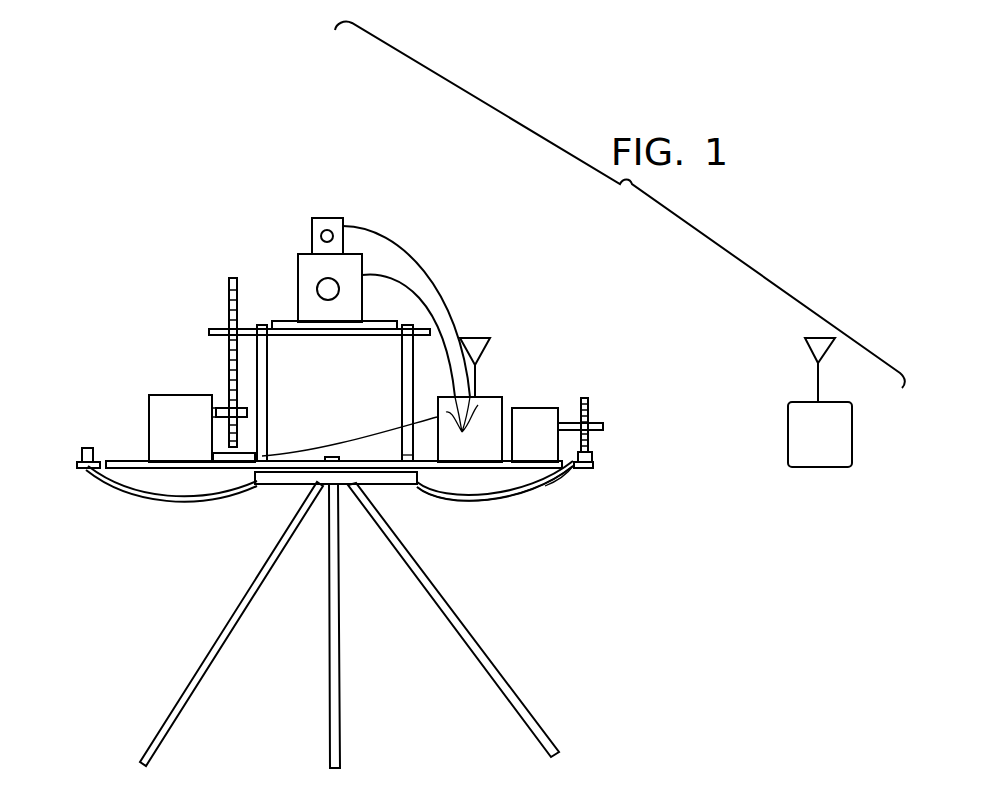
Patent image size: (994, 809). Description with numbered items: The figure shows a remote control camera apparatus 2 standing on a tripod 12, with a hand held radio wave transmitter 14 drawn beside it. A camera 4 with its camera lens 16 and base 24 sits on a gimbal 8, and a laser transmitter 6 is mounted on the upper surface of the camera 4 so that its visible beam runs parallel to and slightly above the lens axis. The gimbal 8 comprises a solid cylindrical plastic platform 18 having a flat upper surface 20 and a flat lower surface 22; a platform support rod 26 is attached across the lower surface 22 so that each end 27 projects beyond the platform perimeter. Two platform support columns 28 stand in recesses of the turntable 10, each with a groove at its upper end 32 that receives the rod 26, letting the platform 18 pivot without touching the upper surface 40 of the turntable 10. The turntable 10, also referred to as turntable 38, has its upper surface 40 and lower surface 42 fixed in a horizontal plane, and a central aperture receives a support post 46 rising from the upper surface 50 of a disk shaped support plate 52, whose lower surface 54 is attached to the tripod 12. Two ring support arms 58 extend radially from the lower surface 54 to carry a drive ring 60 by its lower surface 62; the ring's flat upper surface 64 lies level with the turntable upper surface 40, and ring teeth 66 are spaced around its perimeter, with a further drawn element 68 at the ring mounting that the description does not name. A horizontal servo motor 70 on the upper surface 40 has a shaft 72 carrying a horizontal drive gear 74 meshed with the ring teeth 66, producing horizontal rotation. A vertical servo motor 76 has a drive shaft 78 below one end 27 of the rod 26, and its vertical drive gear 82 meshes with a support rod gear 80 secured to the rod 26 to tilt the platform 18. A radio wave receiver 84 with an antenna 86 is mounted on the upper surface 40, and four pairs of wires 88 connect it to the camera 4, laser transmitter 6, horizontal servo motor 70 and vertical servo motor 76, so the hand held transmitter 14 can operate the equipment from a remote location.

The remote control camera apparatus 2 is at (382, 198).
The camera 4 is at (298, 258).
The laser transmitter 6 is at (318, 217).
The gimbal 8 is at (287, 321).
The turntable 10 is at (110, 461).
The tripod 12 is at (482, 652).
The hand held radio wave transmitter 14 is at (852, 432).
The camera lens 16 is at (364, 264).
The platform 18 is at (377, 321).
The upper surface 20 is at (417, 300).
The lower surface 22 is at (305, 335).
The base 24 is at (305, 320).
The platform support rod 26 is at (208, 332).
The end 27 is at (211, 328).
The platform support columns 28 is at (402, 400).
The upper end 32 is at (400, 338).
The turntable 38 is at (400, 455).
The upper surface 40 is at (122, 461).
The lower surface 42 is at (500, 505).
The support post 46 is at (335, 457).
The upper surface 50 is at (254, 473).
The support plate 52 is at (394, 485).
The lower surface 54 is at (300, 487).
The ring support arms 58 is at (140, 497).
The drive ring 60 is at (77, 466).
The lower surface 62 is at (82, 470).
The upper surface 64 is at (574, 472).
The ring teeth 66 is at (81, 453).
The clamp post 68 is at (88, 448).
The horizontal servo motor 70 is at (538, 408).
The shaft 72 is at (603, 427).
The horizontal drive gear 74 is at (588, 398).
The vertical servo motor 76 is at (178, 395).
The drive shaft 78 is at (216, 413).
The support rod gear 80 is at (230, 282).
The vertical drive gear 82 is at (228, 407).
The radio wave receiver 84 is at (484, 398).
The antenna 86 is at (480, 338).
The pairs of wires 88 is at (465, 429).